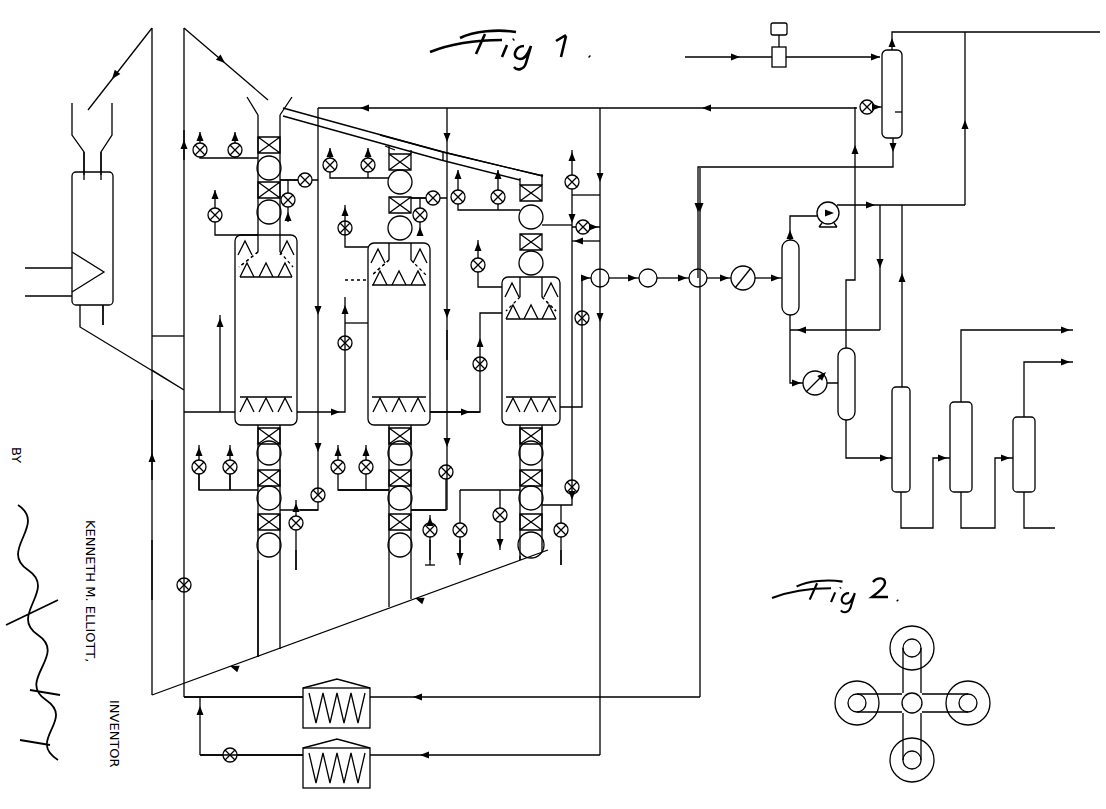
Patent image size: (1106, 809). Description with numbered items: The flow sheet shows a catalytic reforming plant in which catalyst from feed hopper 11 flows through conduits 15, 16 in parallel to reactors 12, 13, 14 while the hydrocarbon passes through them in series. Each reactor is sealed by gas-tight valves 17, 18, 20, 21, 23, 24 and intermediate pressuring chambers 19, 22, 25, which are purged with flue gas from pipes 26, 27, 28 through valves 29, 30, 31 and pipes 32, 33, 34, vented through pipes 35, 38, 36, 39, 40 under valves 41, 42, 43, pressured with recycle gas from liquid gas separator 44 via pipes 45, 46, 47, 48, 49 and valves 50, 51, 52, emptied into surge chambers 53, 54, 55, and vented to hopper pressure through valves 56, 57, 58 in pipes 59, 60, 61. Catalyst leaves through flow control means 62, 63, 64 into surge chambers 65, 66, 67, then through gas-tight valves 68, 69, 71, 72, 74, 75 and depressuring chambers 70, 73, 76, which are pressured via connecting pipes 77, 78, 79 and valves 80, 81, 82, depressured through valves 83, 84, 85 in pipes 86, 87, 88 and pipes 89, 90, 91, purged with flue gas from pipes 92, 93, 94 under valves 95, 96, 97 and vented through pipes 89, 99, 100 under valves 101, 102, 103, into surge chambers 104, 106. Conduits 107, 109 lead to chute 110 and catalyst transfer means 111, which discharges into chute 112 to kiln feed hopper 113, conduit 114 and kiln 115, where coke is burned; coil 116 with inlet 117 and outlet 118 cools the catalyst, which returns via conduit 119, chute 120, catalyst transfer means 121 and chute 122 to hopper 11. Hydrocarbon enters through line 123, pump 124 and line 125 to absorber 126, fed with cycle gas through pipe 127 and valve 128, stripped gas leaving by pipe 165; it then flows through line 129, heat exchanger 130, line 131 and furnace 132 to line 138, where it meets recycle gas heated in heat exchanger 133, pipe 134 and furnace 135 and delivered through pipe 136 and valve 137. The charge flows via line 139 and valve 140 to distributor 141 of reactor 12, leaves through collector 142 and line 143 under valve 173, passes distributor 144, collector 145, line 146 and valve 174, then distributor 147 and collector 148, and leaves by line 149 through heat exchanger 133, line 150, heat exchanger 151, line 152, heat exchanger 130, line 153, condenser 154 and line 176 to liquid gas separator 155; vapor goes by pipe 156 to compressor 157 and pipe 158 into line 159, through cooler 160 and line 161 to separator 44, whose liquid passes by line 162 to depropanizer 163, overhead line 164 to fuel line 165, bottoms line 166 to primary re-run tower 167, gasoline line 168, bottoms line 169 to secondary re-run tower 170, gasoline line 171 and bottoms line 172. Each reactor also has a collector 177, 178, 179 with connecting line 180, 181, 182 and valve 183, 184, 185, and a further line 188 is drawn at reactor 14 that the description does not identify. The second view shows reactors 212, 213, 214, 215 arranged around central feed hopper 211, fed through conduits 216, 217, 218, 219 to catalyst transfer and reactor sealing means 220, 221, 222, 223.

In FIG. 1, the feed hopper 11 is at (285, 106).
In FIG. 1, the reactor 12 is at (266, 330).
In FIG. 1, the reactor 13 is at (399, 334).
In FIG. 1, the reactor 14 is at (531, 351).
In FIG. 1, the conduit 15 is at (252, 106).
In FIG. 1, the conduit 16 is at (374, 142).
In FIG. 1, the gas-tight valve 17 is at (280, 146).
In FIG. 1, the gas-tight valve 18 is at (258, 190).
In FIG. 1, the intermediate pressuring chamber 19 is at (269, 168).
In FIG. 1, the gas-tight valve 20 is at (411, 162).
In FIG. 1, the gas-tight valve 21 is at (389, 205).
In FIG. 1, the intermediate pressuring chamber 22 is at (400, 182).
In FIG. 1, the gas-tight valve 23 is at (545, 185).
In FIG. 1, the gas-tight valve 24 is at (542, 242).
In FIG. 1, the intermediate pressuring chamber 25 is at (531, 217).
In FIG. 1, the pipe 26 is at (290, 216).
In FIG. 1, the pipe 27 is at (423, 233).
In FIG. 1, the pipe 28 is at (600, 196).
In FIG. 1, the valve 29 is at (295, 200).
In FIG. 1, the valve 30 is at (427, 215).
In FIG. 1, the valve 31 is at (575, 172).
In FIG. 1, the pipe 32 is at (298, 176).
In FIG. 1, the pipe 33 is at (431, 194).
In FIG. 1, the pipe 34 is at (550, 224).
In FIG. 1, the pipe 35 is at (212, 158).
In FIG. 1, the pipe 36 is at (348, 178).
In FIG. 1, the pipe 38 is at (203, 138).
In FIG. 1, the pipe 39 is at (331, 159).
In FIG. 1, the pipe 40 is at (460, 178).
In FIG. 1, the valve 41 is at (184, 152).
In FIG. 1, the valve 42 is at (364, 164).
In FIG. 1, the valve 43 is at (458, 210).
In FIG. 1, the liquid gas separator 44 is at (855, 368).
In FIG. 1, the pipe 45 is at (846, 300).
In FIG. 1, the pipe 46 is at (735, 104).
In FIG. 1, the pipe 47 is at (316, 115).
In FIG. 1, the pipe 48 is at (447, 128).
In FIG. 1, the pipe 49 is at (600, 131).
In FIG. 1, the valve 50 is at (305, 173).
In FIG. 1, the valve 51 is at (436, 192).
In FIG. 1, the valve 52 is at (590, 226).
In FIG. 1, the surge chamber 53 is at (257, 214).
In FIG. 1, the surge chamber 54 is at (400, 228).
In FIG. 1, the surge chamber 55 is at (531, 263).
In FIG. 1, the valve 56 is at (233, 143).
In FIG. 1, the valve 57 is at (392, 150).
In FIG. 1, the valve 58 is at (466, 196).
In FIG. 1, the pipe 59 is at (245, 158).
In FIG. 1, the pipe 60 is at (375, 178).
In FIG. 1, the pipe 61 is at (492, 200).
In FIG. 1, the catalyst flow control means 62 is at (280, 437).
In FIG. 1, the catalyst flow control means 63 is at (411, 437).
In FIG. 1, the catalyst flow control means 64 is at (542, 437).
In FIG. 1, the surge chamber 65 is at (281, 458).
In FIG. 1, the surge chamber 66 is at (400, 453).
In FIG. 1, the surge chamber 67 is at (531, 453).
In FIG. 1, the gas-tight valve 68 is at (280, 481).
In FIG. 1, the gas-tight valve 69 is at (258, 524).
In FIG. 1, the depressuring chamber 70 is at (257, 500).
In FIG. 1, the gas-tight valve 71 is at (411, 476).
In FIG. 1, the gas-tight valve 72 is at (409, 535).
In FIG. 1, the depressuring chamber 73 is at (400, 498).
In FIG. 1, the gas-tight valve 74 is at (543, 474).
In FIG. 1, the gas-tight valve 75 is at (565, 506).
In FIG. 1, the depressuring chamber 76 is at (531, 498).
In FIG. 1, the connecting pipe 77 is at (318, 376).
In FIG. 1, the connecting pipe 78 is at (447, 349).
In FIG. 1, the connecting pipe 79 is at (600, 243).
In FIG. 1, the valve 80 is at (322, 505).
In FIG. 1, the valve 81 is at (453, 472).
In FIG. 1, the valve 82 is at (580, 487).
In FIG. 1, the valve 83 is at (234, 460).
In FIG. 1, the valve 84 is at (366, 460).
In FIG. 1, the valve 85 is at (465, 528).
In FIG. 1, the pipe 86 is at (229, 492).
In FIG. 1, the pipe 87 is at (325, 496).
In FIG. 1, the pipe 88 is at (500, 492).
In FIG. 1, the pipe 89 is at (210, 498).
In FIG. 1, the pipe 90 is at (388, 510).
In FIG. 1, the pipe 91 is at (493, 512).
In FIG. 1, the pipe 92 is at (300, 566).
In FIG. 1, the pipe 93 is at (430, 565).
In FIG. 1, the pipe 94 is at (561, 563).
In FIG. 1, the valve 95 is at (303, 525).
In FIG. 1, the valve 96 is at (436, 528).
In FIG. 1, the valve 97 is at (568, 531).
In FIG. 1, the pipe 99 is at (360, 490).
In FIG. 1, the pipe 100 is at (430, 544).
In FIG. 1, the valve 101 is at (205, 460).
In FIG. 1, the valve 102 is at (340, 460).
In FIG. 1, the valve 103 is at (479, 534).
In FIG. 1, the surge chamber 104 is at (257, 547).
In FIG. 1, the surge chamber 106 is at (523, 555).
In FIG. 1, the conduit 107 is at (258, 585).
In FIG. 1, the conduit 109 is at (542, 570).
In FIG. 1, the chute 110 is at (423, 598).
In FIG. 1, the catalyst transfer means 111 is at (152, 442).
In FIG. 1, the chute 112 is at (112, 66).
In FIG. 1, the kiln feed hopper 113 is at (72, 127).
In FIG. 1, the conduit 114 is at (84, 159).
In FIG. 1, the kiln 115 is at (72, 218).
In FIG. 1, the coil 116 is at (78, 262).
In FIG. 1, the inlet 117 is at (30, 296).
In FIG. 1, the outlet 118 is at (40, 268).
In FIG. 1, the conduit 119 is at (105, 329).
In FIG. 1, the chute 120 is at (128, 362).
In FIG. 1, the catalyst transfer means 121 is at (152, 336).
In FIG. 1, the chute 122 is at (214, 50).
In FIG. 1, the line 123 is at (710, 59).
In FIG. 1, the pump 124 is at (779, 67).
In FIG. 1, the line 125 is at (845, 59).
In FIG. 1, the absorber 126 is at (902, 93).
In FIG. 1, the pipe 127 is at (902, 117).
In FIG. 1, the valve 128 is at (862, 103).
In FIG. 1, the line 129 is at (893, 157).
In FIG. 1, the heat exchanger 130 is at (706, 268).
In FIG. 1, the line 131 is at (700, 487).
In FIG. 1, the heater 132 is at (370, 720).
In FIG. 1, the heat exchanger 133 is at (606, 272).
In FIG. 1, the pipe 134 is at (600, 440).
In FIG. 1, the heater 135 is at (370, 780).
In FIG. 1, the pipe 136 is at (282, 758).
In FIG. 1, the valve 137 is at (242, 744).
In FIG. 1, the line 138 is at (272, 697).
In FIG. 1, the line 139 is at (152, 566).
In FIG. 1, the valve 140 is at (187, 592).
In FIG. 1, the distributor 141 is at (266, 284).
In FIG. 1, the collector 142 is at (266, 391).
In FIG. 1, the line 143 is at (375, 325).
In FIG. 1, the distributor 144 is at (399, 298).
In FIG. 1, the collector 145 is at (399, 395).
In FIG. 1, the line 146 is at (468, 412).
In FIG. 1, the distributor 147 is at (531, 338).
In FIG. 1, the collector 148 is at (531, 392).
In FIG. 1, the line 149 is at (600, 367).
In FIG. 1, the line 150 is at (632, 281).
In FIG. 1, the heat exchanger 151 is at (654, 272).
In FIG. 1, the line 152 is at (684, 281).
In FIG. 1, the line 153 is at (726, 281).
In FIG. 1, the condenser 154 is at (757, 264).
In FIG. 1, the liquid gas separator 155 is at (799, 262).
In FIG. 1, the pipe 156 is at (790, 220).
In FIG. 1, the compressor 157 is at (836, 203).
In FIG. 1, the pipe 158 is at (880, 249).
In FIG. 1, the line 159 is at (790, 330).
In FIG. 1, the cooler 160 is at (803, 388).
In FIG. 1, the line 161 is at (815, 396).
In FIG. 1, the line 162 is at (846, 452).
In FIG. 1, the depropanizer 163 is at (905, 400).
In FIG. 1, the line 164 is at (902, 293).
In FIG. 1, the pipe 165 is at (966, 32).
In FIG. 1, the line 166 is at (901, 528).
In FIG. 1, the primary re-run tower 167 is at (962, 436).
In FIG. 1, the line 168 is at (961, 330).
In FIG. 1, the line 169 is at (963, 530).
In FIG. 1, the secondary re-run tower 170 is at (1035, 436).
In FIG. 1, the line 171 is at (1024, 362).
In FIG. 1, the line 172 is at (1028, 530).
In FIG. 1, the valve 173 is at (352, 344).
In FIG. 1, the valve 174 is at (475, 370).
In FIG. 1, the line 176 is at (790, 318).
In FIG. 1, the collector 177 is at (240, 266).
In FIG. 1, the collector 178 is at (358, 280).
In FIG. 1, the collector 179 is at (545, 313).
In FIG. 1, the connecting line 180 is at (228, 236).
In FIG. 1, the connecting line 181 is at (356, 248).
In FIG. 1, the connecting line 182 is at (352, 228).
In FIG. 1, the valve 183 is at (219, 212).
In FIG. 1, the valve 184 is at (520, 238).
In FIG. 1, the valve 185 is at (481, 258).
In FIG. 1, the line 188 is at (480, 313).
In FIG. 2, the central feed hopper 211 is at (920, 700).
In FIG. 2, the reactor 212 is at (840, 695).
In FIG. 2, the reactor 213 is at (922, 643).
In FIG. 2, the reactor 214 is at (985, 695).
In FIG. 2, the reactor 215 is at (895, 770).
In FIG. 2, the conduit 216 is at (886, 695).
In FIG. 2, the conduit 217 is at (915, 676).
In FIG. 2, the conduit 218 is at (935, 718).
In FIG. 2, the conduit 219 is at (908, 726).
In FIG. 2, the catalyst transfer and reactor sealing means 220 is at (848, 708).
In FIG. 2, the catalyst transfer and reactor sealing means 221 is at (921, 650).
In FIG. 2, the catalyst transfer and reactor sealing means 222 is at (977, 706).
In FIG. 2, the catalyst transfer and reactor sealing means 223 is at (921, 766).